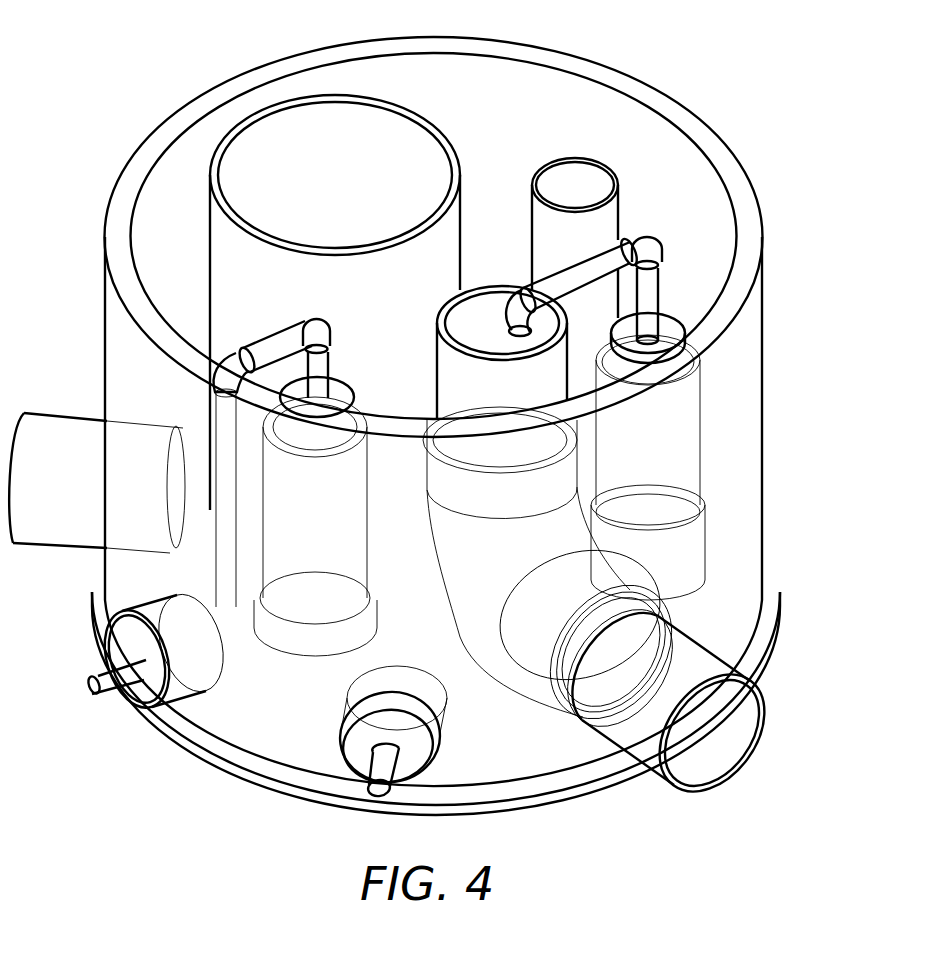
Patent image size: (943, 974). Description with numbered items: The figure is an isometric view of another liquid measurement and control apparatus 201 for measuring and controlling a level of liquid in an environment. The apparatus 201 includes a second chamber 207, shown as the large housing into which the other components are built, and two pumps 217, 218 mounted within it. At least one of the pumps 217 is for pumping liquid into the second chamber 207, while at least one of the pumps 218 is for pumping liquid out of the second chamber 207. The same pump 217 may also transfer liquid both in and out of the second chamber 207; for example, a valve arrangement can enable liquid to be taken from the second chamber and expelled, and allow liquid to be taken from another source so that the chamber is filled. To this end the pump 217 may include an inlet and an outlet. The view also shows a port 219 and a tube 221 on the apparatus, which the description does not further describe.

The apparatus 201 is at (176, 57).
The second chamber 207 is at (695, 206).
The pump 217 is at (295, 530).
The pump 218 is at (690, 415).
The inlet port 219 is at (150, 696).
The vent tube 221 is at (583, 180).